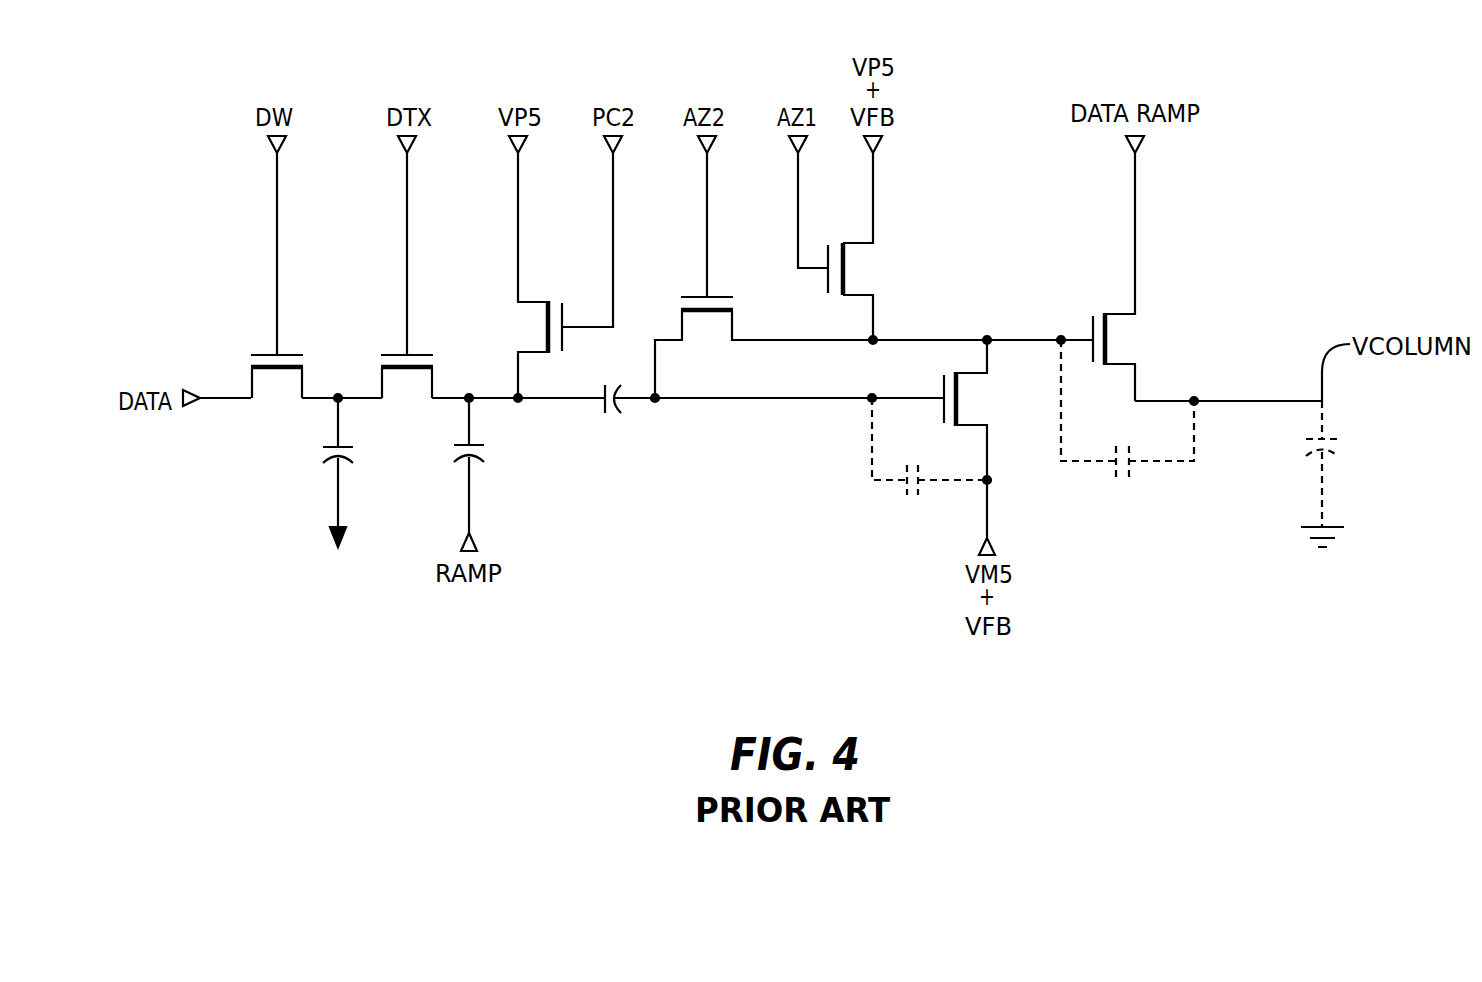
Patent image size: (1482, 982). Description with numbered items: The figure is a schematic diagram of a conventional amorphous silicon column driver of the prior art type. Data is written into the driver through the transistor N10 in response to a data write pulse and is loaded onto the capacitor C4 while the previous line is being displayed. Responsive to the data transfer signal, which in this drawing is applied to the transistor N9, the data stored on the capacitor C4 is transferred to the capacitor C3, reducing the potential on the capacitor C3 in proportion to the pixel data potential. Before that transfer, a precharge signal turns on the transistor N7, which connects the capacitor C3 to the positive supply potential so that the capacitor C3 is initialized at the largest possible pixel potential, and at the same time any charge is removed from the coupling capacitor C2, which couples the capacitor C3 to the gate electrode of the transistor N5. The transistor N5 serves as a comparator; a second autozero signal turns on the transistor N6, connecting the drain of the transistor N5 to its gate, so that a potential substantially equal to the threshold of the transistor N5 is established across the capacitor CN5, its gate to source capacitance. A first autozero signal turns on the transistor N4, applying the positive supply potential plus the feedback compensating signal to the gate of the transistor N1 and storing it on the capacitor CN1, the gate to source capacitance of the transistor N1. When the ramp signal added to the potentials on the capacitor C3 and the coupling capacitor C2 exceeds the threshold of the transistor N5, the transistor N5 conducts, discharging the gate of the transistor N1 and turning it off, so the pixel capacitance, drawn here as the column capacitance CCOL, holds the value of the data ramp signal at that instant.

The transistor N10 is at (277, 286).
The transistor N9 (DTX-controlled transfer switch) N9 is at (407, 286).
The transistor N7 is at (552, 275).
The transistor N6 is at (764, 275).
The transistor N4 is at (848, 246).
The transistor N5 is at (976, 410).
The transistor N1 is at (1128, 277).
The capacitor C4 is at (359, 472).
The capacitor C3 is at (493, 474).
The coupling capacitor C2 is at (626, 416).
The capacitor CN5 is at (929, 463).
The capacitor CN1 is at (1127, 429).
The column capacitance CCOL (25 pF) CCOL is at (1360, 474).